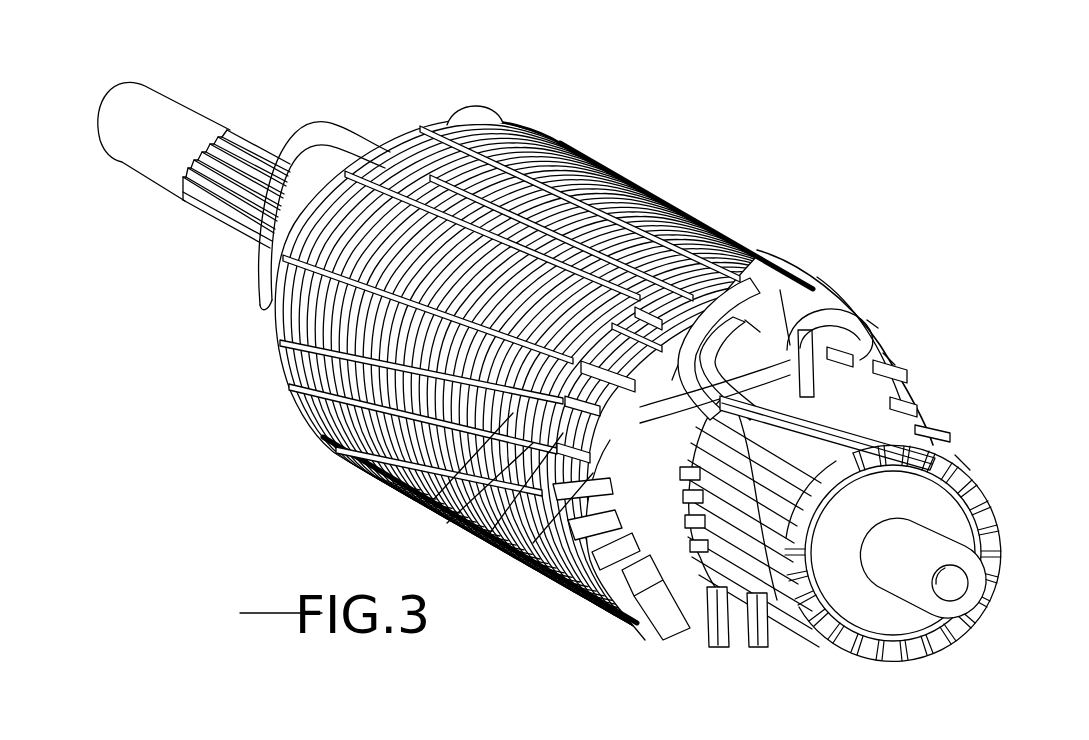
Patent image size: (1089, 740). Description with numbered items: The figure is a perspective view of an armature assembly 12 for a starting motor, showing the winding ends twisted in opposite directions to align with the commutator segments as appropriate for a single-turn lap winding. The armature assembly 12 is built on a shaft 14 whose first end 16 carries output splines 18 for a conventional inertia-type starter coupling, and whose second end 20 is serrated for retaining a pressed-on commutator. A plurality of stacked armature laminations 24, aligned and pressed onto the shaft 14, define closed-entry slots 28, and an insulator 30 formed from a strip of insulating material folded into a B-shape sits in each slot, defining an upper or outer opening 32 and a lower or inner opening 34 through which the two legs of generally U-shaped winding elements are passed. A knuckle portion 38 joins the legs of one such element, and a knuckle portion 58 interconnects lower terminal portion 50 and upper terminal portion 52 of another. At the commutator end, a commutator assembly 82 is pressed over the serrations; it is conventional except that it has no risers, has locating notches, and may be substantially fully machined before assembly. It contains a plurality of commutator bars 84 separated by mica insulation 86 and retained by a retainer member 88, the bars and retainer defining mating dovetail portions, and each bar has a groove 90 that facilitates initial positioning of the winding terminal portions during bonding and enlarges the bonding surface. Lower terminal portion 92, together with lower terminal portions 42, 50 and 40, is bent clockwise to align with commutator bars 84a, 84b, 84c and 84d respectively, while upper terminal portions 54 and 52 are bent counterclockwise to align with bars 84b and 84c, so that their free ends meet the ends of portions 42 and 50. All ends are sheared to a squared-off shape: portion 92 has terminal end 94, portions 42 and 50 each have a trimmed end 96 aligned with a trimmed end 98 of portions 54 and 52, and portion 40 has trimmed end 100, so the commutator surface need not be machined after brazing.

The armature assembly 12 is at (563, 96).
The shaft 14 is at (257, 121).
The first end 16 is at (173, 113).
The output splines 18 is at (235, 205).
The second end 20 is at (962, 533).
The armature laminations 24 is at (650, 193).
The slots 28 is at (582, 188).
The insulator 30 is at (447, 496).
The upper or outer opening 32 is at (490, 505).
The lower or inner opening 34 is at (697, 268).
The knuckle portion 38 is at (320, 142).
The lower terminal portion 40 is at (745, 320).
The lower terminal portion 42 is at (487, 537).
The lower terminal portion 50 is at (770, 330).
The upper terminal portion 52 is at (847, 317).
The upper terminal portion 54 is at (760, 300).
The knuckle portion 58 is at (478, 112).
The commutator assembly 82 is at (940, 470).
The commutator bars 84 is at (955, 485).
The commutator bar 84a is at (950, 433).
The commutator bar 84b is at (937, 410).
The commutator bar 84c is at (910, 370).
The commutator bar 84d is at (964, 461).
The mica insulation 86 is at (988, 588).
The retainer member 88 is at (877, 612).
The groove 90 is at (687, 637).
The lower terminal portion 92 is at (533, 543).
The terminal end 94 is at (587, 560).
The sheared or trimmed end 96 is at (733, 562).
The sheared or trimmed end 98 is at (765, 560).
The sheared or trimmed end 100 is at (907, 390).